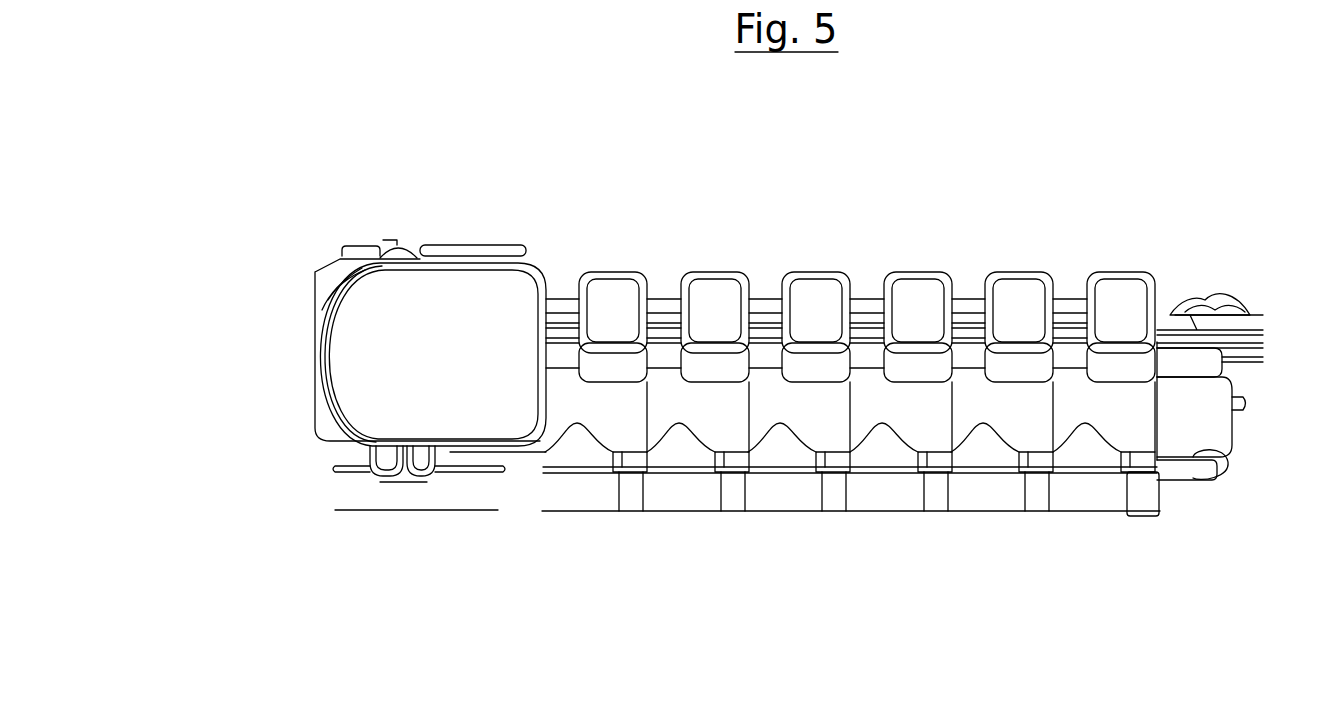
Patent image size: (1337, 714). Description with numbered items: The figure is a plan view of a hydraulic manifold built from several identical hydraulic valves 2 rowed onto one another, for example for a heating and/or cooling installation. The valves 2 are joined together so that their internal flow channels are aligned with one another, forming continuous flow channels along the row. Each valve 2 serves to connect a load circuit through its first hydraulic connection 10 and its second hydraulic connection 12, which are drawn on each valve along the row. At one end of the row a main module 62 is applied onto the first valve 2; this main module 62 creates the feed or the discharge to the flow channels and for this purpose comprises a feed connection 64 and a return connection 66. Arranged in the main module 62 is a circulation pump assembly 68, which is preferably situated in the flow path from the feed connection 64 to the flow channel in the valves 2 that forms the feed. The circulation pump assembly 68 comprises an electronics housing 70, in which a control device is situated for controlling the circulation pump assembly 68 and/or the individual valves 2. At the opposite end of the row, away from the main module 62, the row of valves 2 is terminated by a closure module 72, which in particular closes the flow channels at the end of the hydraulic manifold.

The valve 2 is at (613, 267).
The first hydraulic connection 10 is at (628, 513).
The second hydraulic connection 12 is at (573, 513).
The main module 62 is at (467, 242).
The feed connection 64 is at (470, 510).
The return connection 66 is at (350, 510).
The circulation pump assembly 68 is at (337, 289).
The electronics housing 70 is at (350, 390).
The closure module 72 is at (1233, 460).